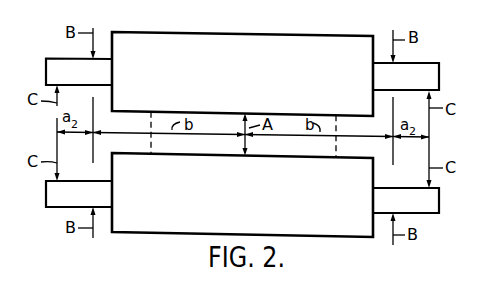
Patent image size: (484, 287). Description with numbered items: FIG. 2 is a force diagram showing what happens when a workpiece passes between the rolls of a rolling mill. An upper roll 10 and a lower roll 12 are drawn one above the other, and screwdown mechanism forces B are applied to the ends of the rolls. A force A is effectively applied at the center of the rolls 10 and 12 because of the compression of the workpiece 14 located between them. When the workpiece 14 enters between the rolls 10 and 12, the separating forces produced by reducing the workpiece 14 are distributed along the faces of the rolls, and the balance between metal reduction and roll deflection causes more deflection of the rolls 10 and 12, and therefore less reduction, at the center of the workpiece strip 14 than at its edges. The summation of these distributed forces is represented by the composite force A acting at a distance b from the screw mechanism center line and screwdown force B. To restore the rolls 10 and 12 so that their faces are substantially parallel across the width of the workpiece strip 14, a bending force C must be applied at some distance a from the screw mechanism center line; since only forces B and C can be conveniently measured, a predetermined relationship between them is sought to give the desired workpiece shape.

The upper roll 10 is at (339, 36).
The lower roll 12 is at (338, 238).
The workpiece 14 is at (338, 121).